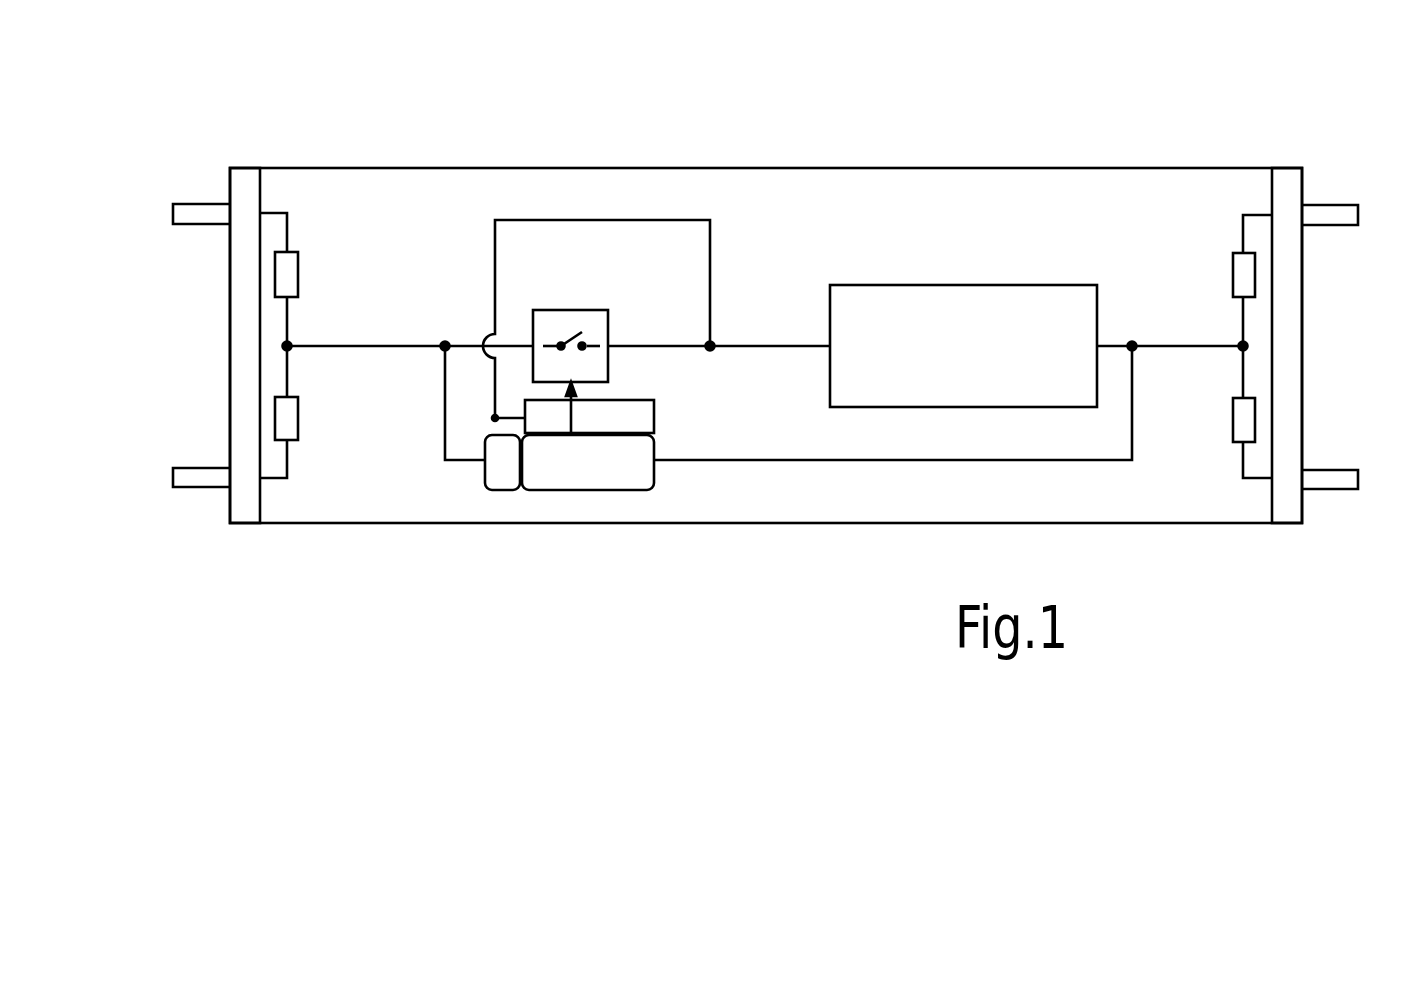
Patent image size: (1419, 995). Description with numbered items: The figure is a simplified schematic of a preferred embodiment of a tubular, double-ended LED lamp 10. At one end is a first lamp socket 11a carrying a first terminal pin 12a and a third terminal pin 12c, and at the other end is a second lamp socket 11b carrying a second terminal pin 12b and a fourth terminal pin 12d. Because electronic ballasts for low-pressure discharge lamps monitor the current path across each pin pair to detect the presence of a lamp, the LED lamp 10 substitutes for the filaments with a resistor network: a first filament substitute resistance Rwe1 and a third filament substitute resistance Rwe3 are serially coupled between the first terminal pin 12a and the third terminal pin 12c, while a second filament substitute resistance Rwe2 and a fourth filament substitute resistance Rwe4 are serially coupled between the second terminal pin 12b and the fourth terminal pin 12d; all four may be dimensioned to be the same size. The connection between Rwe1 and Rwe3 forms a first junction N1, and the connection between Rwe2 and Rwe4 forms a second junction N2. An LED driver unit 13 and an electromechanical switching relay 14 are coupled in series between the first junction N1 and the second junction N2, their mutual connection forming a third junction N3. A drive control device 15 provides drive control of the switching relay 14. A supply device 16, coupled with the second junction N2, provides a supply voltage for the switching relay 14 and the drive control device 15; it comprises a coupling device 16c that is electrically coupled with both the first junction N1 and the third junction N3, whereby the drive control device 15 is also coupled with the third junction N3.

The LED lamp 10 is at (498, 137).
The first lamp socket 11a is at (245, 530).
The second lamp socket 11b is at (1285, 520).
The first terminal pin 12a is at (200, 212).
The second terminal pin 12b is at (1336, 213).
The third terminal pin 12c is at (198, 483).
The fourth terminal pin 12d is at (1333, 483).
The LED driver unit 13 is at (980, 361).
The electromechanical switching relay 14 is at (582, 310).
The drive control device 15 is at (654, 418).
The supply device 16 is at (606, 478).
The coupling device 16c is at (499, 480).
The first junction N1 is at (442, 342).
The second junction N2 is at (1240, 343).
The third junction N3 is at (712, 342).
The first filament substitute resistance Rwe1 is at (320, 279).
The second filament substitute resistance Rwe2 is at (1207, 280).
The third filament substitute resistance Rwe3 is at (320, 412).
The fourth filament substitute resistance Rwe4 is at (1207, 412).